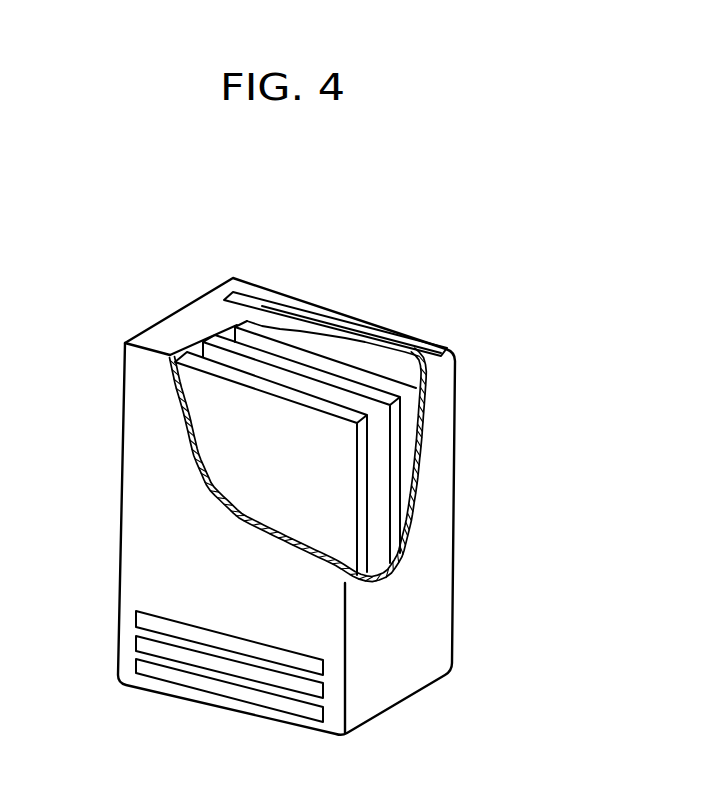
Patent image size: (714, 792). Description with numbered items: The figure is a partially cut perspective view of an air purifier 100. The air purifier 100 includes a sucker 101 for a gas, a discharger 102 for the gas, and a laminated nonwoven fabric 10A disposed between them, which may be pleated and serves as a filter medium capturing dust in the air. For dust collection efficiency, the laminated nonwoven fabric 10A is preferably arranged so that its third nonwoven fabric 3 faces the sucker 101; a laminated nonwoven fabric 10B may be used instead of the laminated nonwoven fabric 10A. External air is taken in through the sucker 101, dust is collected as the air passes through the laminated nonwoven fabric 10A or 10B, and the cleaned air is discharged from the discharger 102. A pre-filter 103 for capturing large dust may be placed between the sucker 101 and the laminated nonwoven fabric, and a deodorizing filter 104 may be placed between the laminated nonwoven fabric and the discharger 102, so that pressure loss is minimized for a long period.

The air purifier 100 is at (396, 250).
The sucker 101 is at (104, 602).
The discharger 102 is at (257, 296).
The pre-filter 103 is at (228, 437).
The deodorizing filter 104 is at (406, 392).
The third nonwoven fabric 3 is at (294, 412).
The laminated nonwoven fabric 10A is at (213, 334).
The laminated nonwoven fabric 10B is at (301, 449).